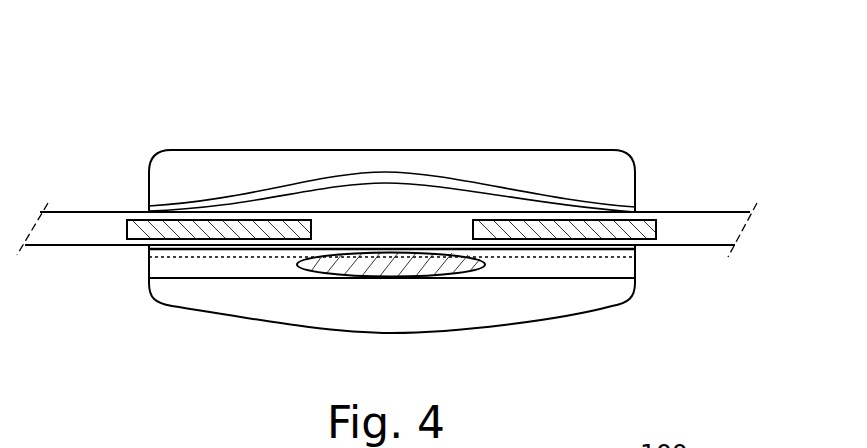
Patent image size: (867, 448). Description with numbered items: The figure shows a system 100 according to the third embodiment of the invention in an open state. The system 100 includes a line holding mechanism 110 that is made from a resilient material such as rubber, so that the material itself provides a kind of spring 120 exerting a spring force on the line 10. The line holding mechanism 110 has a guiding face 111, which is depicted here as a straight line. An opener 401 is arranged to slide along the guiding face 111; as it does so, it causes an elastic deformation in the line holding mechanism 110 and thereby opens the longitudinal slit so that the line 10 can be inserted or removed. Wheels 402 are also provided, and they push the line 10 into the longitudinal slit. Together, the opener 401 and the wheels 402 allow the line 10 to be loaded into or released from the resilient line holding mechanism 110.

The line 10 is at (692, 212).
The system 100 is at (392, 216).
The line holding mechanism 110 is at (513, 150).
The guiding face 111 is at (245, 280).
The spring 120 is at (560, 297).
The opener 401 is at (415, 265).
The wheels 402 is at (145, 223).